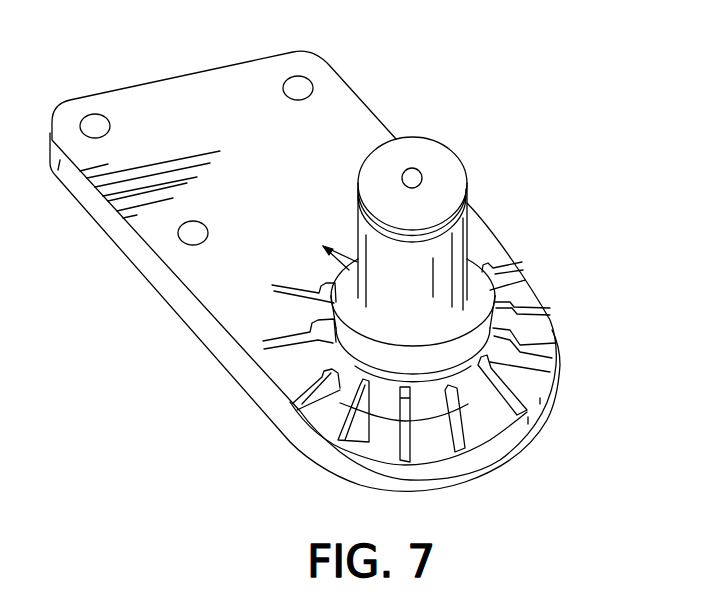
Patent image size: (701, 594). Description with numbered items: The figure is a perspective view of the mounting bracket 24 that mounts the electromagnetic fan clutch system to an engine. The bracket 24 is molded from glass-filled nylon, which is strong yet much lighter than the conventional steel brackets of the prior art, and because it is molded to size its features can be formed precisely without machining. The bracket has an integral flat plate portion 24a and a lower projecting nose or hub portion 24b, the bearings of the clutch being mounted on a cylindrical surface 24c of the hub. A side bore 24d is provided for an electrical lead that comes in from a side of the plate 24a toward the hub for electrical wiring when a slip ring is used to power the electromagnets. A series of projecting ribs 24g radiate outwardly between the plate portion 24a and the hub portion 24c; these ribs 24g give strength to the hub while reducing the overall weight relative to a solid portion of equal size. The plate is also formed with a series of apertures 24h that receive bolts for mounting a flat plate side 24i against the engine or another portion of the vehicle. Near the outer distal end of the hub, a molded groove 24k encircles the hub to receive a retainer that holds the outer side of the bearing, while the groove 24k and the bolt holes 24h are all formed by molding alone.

The mounting bracket 24 is at (404, 110).
The flat plate portion 24a is at (200, 92).
The hub portion 24b is at (467, 223).
The cylindrical surface of the hub 24c is at (400, 290).
The side bore 24d is at (420, 171).
The projecting ribs 24g is at (553, 344).
The apertures 24h is at (90, 120).
The flat plate side 24i is at (267, 413).
The molded groove 24k is at (358, 233).